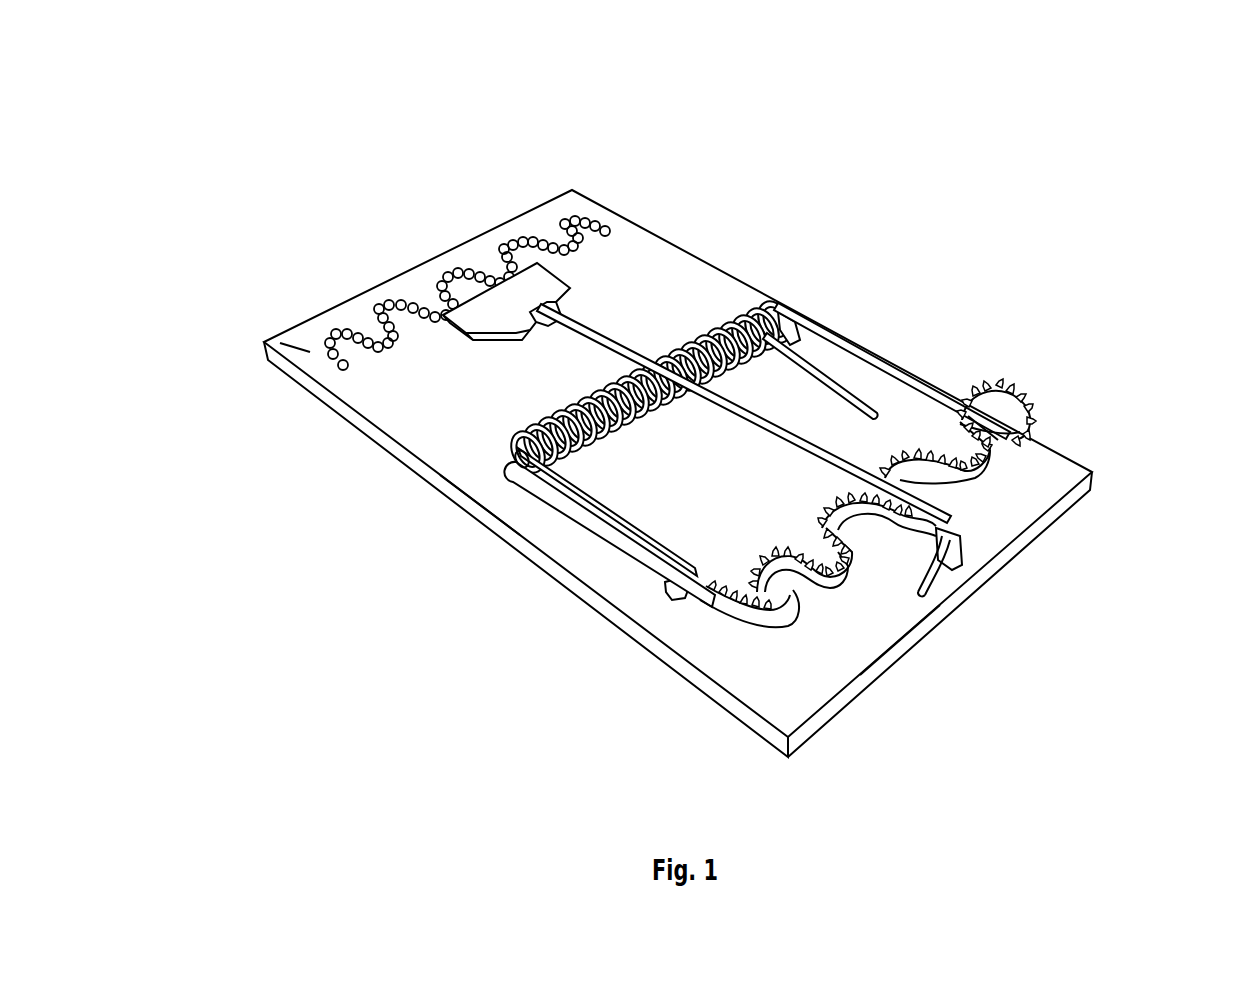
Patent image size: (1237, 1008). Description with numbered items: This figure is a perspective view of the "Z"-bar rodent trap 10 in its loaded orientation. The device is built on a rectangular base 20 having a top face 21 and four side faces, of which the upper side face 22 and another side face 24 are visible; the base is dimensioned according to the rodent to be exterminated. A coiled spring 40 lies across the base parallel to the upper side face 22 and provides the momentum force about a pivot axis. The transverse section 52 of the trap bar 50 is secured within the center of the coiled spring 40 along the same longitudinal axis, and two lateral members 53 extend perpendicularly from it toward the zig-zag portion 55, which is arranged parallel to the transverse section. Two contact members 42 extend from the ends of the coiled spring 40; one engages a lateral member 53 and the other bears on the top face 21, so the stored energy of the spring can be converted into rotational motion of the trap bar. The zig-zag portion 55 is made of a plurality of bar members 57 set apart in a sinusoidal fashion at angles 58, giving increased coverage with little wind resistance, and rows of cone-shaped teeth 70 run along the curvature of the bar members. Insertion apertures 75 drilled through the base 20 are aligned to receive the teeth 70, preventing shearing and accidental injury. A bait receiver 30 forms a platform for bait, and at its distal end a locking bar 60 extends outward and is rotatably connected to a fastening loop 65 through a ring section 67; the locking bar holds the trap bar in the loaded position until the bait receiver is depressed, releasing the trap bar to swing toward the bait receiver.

The "Z"-bar rodent trap 10 is at (1112, 170).
The base 20 is at (372, 280).
The top face 21 is at (300, 345).
The upper side face 22 is at (900, 650).
The side face 24 is at (480, 517).
The bait receiver 30 is at (510, 305).
The coiled spring 40 is at (518, 432).
The contact member 42 is at (830, 375).
The trap bar 50 is at (840, 324).
The transverse section 52 is at (518, 468).
The lateral member 53 is at (915, 370).
The zig-zag portion 55 is at (1000, 504).
The bar member 57 is at (977, 473).
The angle 58 is at (960, 428).
The locking bar 60 is at (615, 340).
The fastening loop 65 is at (933, 582).
The ring section 67 is at (957, 545).
The teeth 70 is at (845, 584).
The insertion apertures 75 is at (375, 313).